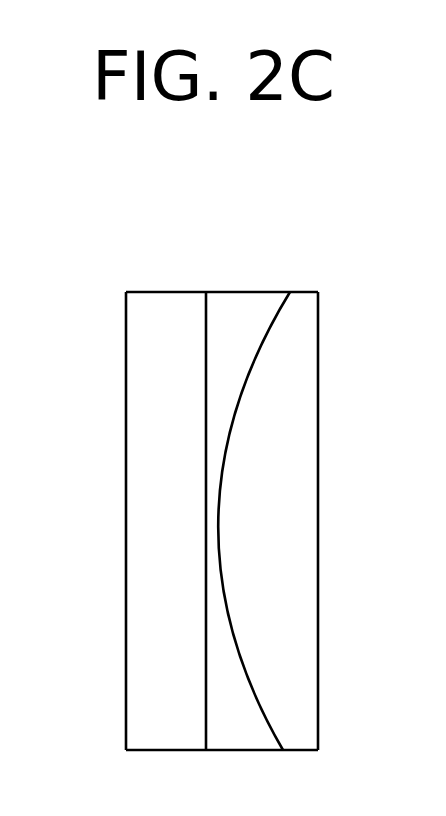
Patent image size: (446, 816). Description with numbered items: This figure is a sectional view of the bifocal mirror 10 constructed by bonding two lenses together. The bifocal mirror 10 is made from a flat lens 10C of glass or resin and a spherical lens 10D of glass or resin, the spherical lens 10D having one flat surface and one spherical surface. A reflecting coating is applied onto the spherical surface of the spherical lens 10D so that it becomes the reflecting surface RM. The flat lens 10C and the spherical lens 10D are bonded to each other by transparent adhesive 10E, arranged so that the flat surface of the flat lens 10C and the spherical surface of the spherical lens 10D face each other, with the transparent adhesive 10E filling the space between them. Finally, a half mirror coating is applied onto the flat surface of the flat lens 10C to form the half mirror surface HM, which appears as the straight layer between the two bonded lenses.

The bifocal mirror 10 is at (228, 464).
The flat lens 10C is at (157, 292).
The spherical lens 10D is at (318, 348).
The transparent adhesive 10E is at (267, 292).
The half mirror surface HM is at (126, 470).
The reflecting surface RM is at (265, 711).